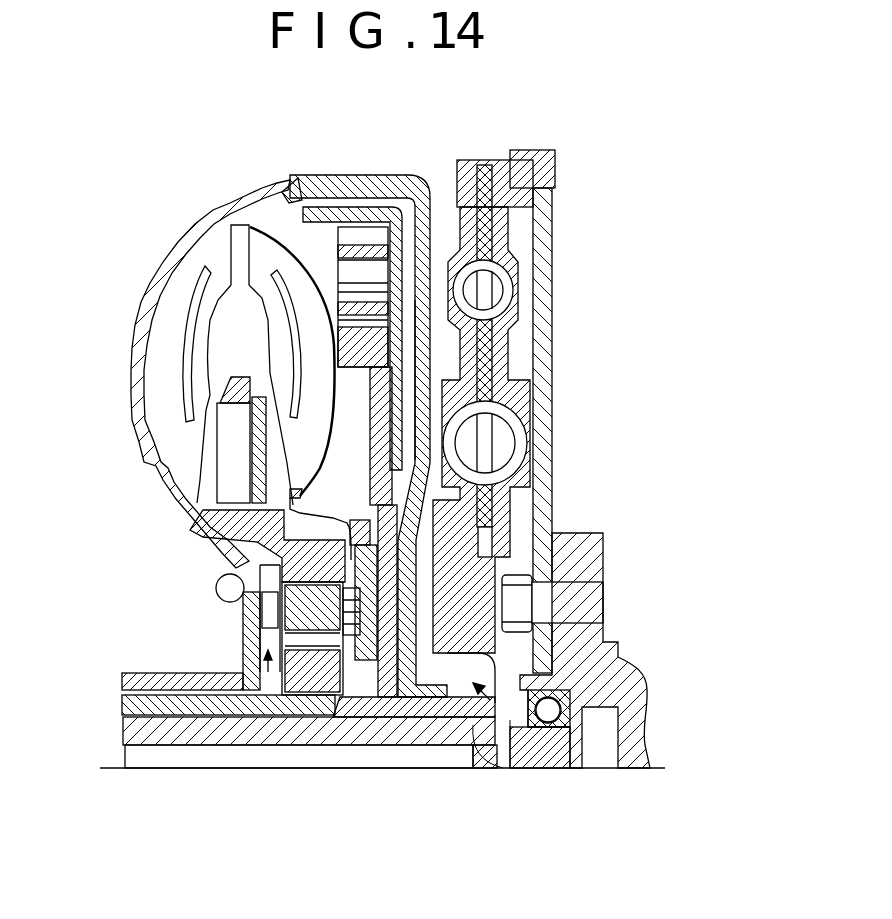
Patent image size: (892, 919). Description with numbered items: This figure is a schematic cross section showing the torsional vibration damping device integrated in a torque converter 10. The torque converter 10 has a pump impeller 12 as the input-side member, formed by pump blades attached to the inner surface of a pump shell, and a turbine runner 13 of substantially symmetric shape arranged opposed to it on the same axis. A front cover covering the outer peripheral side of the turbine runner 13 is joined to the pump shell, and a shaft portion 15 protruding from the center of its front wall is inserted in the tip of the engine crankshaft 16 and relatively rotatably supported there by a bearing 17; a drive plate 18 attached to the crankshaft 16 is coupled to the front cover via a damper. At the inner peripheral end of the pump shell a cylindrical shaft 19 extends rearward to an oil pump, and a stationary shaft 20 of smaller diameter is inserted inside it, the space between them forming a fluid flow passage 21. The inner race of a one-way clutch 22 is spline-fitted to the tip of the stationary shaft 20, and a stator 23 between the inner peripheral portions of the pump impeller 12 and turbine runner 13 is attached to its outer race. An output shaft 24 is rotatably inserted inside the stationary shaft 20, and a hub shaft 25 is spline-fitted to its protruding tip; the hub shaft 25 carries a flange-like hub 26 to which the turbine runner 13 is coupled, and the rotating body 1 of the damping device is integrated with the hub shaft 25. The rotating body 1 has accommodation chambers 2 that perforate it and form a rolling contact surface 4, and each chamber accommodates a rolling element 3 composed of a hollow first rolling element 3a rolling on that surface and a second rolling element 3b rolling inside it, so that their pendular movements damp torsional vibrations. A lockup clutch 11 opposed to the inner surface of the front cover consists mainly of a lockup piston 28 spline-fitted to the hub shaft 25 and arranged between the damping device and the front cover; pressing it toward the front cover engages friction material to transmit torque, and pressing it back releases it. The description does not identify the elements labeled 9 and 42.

The rotating body 1 is at (376, 397).
The accommodation chambers 2 is at (219, 251).
The rolling elements 3 is at (76, 250).
The first rolling element 3a is at (386, 300).
The second rolling element 3b is at (386, 262).
The rolling contact surface 4 is at (337, 258).
The clutch drum 9 is at (440, 290).
The torque converter 10 is at (197, 191).
The lockup clutch 11 is at (530, 431).
The pump impeller 12 is at (176, 236).
The turbine runner 13 is at (263, 192).
The shaft portion 15 is at (547, 760).
The crankshaft 16 is at (620, 663).
The bearing 17 is at (555, 713).
The drive plate 18 is at (555, 293).
The cylindrical shaft 19 is at (158, 680).
The stationary shaft 20 is at (143, 707).
The fluid flow passage 21 is at (178, 684).
The one-way clutch 22 is at (265, 600).
The stator 23 is at (230, 478).
The output shaft 24 is at (203, 733).
The hub shaft 25 is at (382, 748).
The hub 26 is at (317, 660).
The lockup piston 28 is at (495, 352).
The cover side wall 42 is at (434, 240).